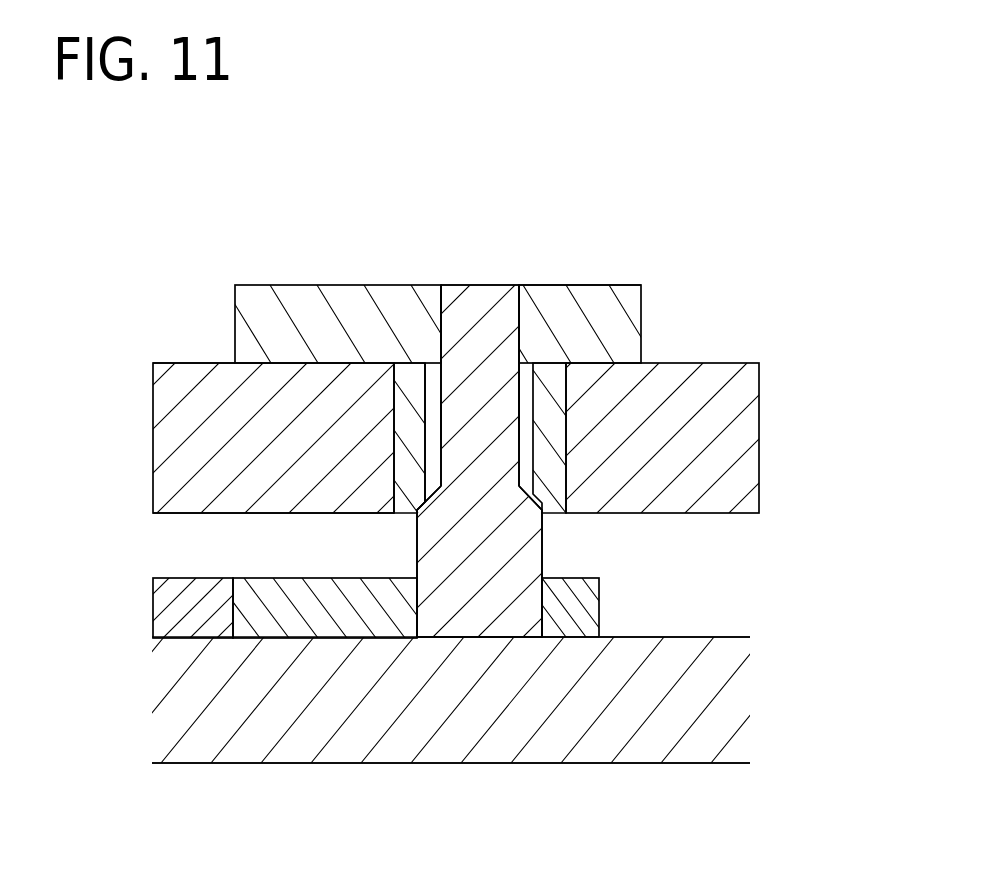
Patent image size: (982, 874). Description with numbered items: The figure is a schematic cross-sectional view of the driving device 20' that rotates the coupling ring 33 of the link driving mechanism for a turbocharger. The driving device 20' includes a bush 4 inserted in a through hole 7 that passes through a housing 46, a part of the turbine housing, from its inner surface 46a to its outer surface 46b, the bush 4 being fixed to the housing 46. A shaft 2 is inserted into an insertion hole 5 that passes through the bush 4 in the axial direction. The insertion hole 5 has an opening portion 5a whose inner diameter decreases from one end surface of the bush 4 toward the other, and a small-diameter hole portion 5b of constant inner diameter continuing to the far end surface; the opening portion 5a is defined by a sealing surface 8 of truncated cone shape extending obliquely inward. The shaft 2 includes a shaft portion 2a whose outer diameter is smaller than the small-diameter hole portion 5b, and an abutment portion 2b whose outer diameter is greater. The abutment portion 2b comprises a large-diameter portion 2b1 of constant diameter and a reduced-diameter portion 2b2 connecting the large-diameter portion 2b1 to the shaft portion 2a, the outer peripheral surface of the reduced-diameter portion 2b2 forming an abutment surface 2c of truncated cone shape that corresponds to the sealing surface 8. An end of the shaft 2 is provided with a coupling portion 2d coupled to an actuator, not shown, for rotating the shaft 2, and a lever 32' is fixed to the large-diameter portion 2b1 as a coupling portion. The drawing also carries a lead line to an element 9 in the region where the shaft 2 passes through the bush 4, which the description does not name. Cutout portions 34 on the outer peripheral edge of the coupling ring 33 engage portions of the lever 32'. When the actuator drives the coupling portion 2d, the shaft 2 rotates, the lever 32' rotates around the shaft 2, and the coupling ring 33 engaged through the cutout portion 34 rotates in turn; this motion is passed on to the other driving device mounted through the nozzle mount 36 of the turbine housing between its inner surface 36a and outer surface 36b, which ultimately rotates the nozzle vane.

The shaft 2 is at (760, 520).
The shaft portion 2a is at (520, 462).
The abutment portion 2b is at (690, 545).
The large-diameter portion 2b1 is at (533, 600).
The reduced-diameter portion 2b2 is at (535, 503).
The abutment surface 2c is at (415, 503).
The coupling portion 2d is at (641, 312).
The bush 4 is at (560, 413).
The insertion hole 5 is at (537, 167).
The opening portion 5a is at (527, 503).
The small-diameter hole portion 5b is at (523, 503).
The through hole 7 is at (407, 425).
The sealing surface 8 is at (420, 508).
The boundary 9 is at (525, 430).
The driving device 20' is at (614, 249).
The lever 32' is at (602, 608).
The coupling ring 33 is at (197, 625).
The cutout portion 34 is at (235, 600).
The nozzle mount 36 is at (590, 748).
The inner surface 36a is at (675, 763).
The outer surface 36b is at (743, 637).
The housing 46 is at (759, 422).
The inner surface 46a is at (172, 514).
The outer surface 46b is at (202, 363).